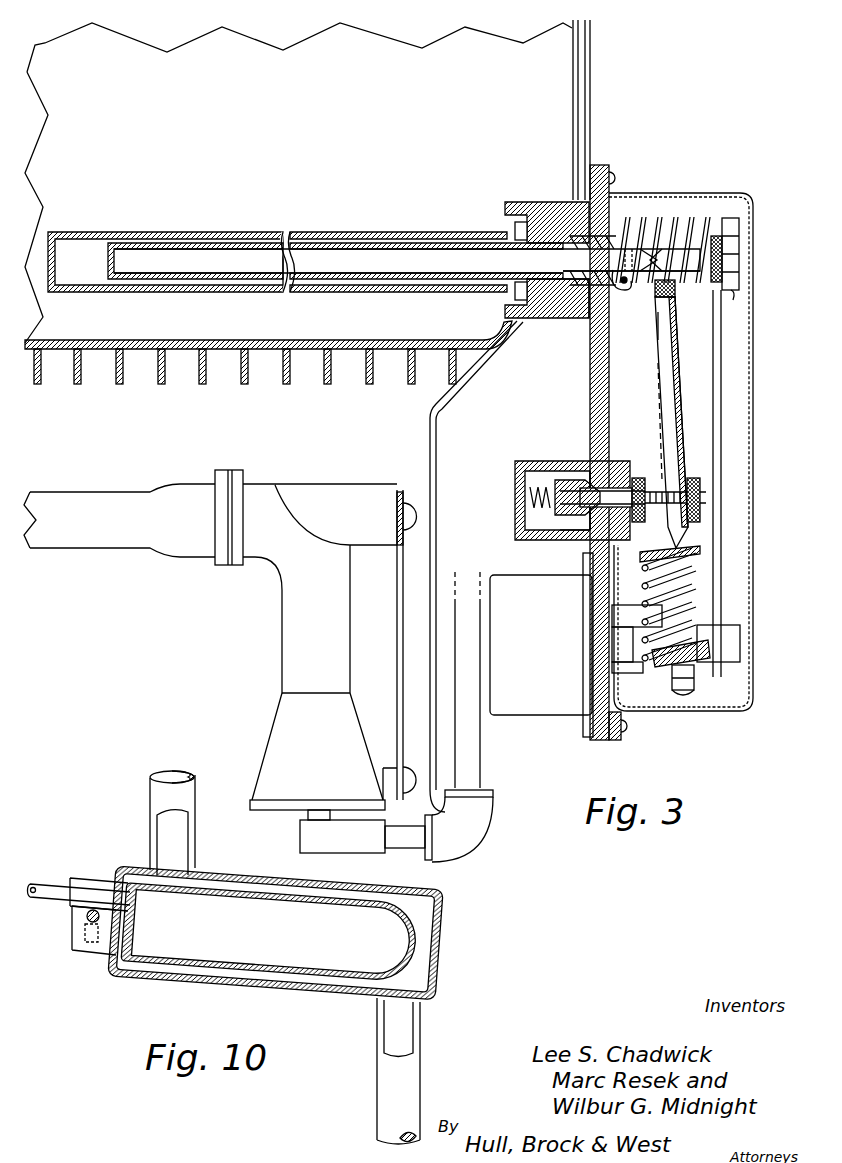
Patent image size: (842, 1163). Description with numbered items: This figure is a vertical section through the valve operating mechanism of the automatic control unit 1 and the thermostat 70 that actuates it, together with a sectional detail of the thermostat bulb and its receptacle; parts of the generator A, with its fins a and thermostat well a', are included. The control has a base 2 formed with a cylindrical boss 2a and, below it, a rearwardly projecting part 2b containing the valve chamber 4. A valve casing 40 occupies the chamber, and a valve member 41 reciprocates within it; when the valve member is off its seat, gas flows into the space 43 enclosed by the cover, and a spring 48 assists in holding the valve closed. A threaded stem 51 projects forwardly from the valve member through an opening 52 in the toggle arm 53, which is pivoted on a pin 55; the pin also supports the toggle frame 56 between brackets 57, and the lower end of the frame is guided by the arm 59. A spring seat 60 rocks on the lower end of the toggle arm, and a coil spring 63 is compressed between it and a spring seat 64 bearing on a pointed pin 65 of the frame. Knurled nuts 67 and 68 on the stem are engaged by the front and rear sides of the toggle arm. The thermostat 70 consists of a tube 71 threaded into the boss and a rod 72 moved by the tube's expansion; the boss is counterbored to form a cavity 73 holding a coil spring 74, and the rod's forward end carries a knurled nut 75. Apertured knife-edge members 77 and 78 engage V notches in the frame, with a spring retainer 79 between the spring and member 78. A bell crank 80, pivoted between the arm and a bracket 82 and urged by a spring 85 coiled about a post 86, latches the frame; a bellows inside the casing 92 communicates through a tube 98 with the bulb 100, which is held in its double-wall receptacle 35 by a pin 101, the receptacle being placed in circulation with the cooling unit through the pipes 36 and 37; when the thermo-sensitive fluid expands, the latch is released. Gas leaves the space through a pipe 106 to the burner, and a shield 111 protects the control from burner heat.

In FIG. 3, the automatic control unit 1 is at (112, 545).
In FIG. 3, the base 2 is at (605, 163).
In FIG. 3, the cylindrical boss 2a is at (545, 203).
In FIG. 3, the rearwardly projecting part 2b is at (562, 460).
In FIG. 3, the valve chamber 4 is at (530, 480).
In FIG. 10, the heater casing 35 is at (447, 958).
In FIG. 10, the inlet pipe 36 is at (151, 823).
In FIG. 10, the outlet pipe 37 is at (412, 1075).
In FIG. 3, the valve casing 40 is at (627, 460).
In FIG. 3, the valve member 41 is at (582, 535).
In FIG. 3, the space enclosed by cover 43 is at (753, 412).
In FIG. 3, the spring 48 is at (540, 512).
In FIG. 3, the threaded stem 51 is at (680, 482).
In FIG. 3, the opening 52 is at (658, 515).
In FIG. 3, the toggle arm 53 is at (667, 412).
In FIG. 3, the pin 55 is at (650, 333).
In FIG. 3, the toggle frame 56 is at (687, 378).
In FIG. 3, the brackets 57 is at (622, 325).
In FIG. 3, the arm 59 is at (612, 617).
In FIG. 3, the spring seat 60 is at (694, 554).
In FIG. 3, the coil spring 63 is at (697, 581).
In FIG. 3, the spring seat 64 is at (660, 667).
In FIG. 3, the pointed pin 65 is at (692, 672).
In FIG. 3, the knurled nut 67 is at (702, 490).
In FIG. 3, the knurled nut 68 is at (641, 476).
In FIG. 3, the thermostat 70 is at (392, 234).
In FIG. 3, the tube 71 is at (353, 292).
In FIG. 3, the rod 72 is at (225, 262).
In FIG. 3, the cavity 73 is at (572, 320).
In FIG. 3, the coil spring 74 is at (616, 284).
In FIG. 3, the knurled nut 75 is at (735, 285).
In FIG. 3, the apertured knife-edge bearing member 77 is at (730, 217).
In FIG. 3, the apertured knife-edge bearing member 78 is at (652, 226).
In FIG. 3, the spring retainer 79 is at (625, 214).
In FIG. 3, the bell crank 80 is at (740, 641).
In FIG. 3, the bracket 82 is at (612, 668).
In FIG. 3, the spring 85 is at (722, 438).
In FIG. 3, the post 86 is at (716, 233).
In FIG. 3, the cylindrical casing 92 is at (541, 645).
In FIG. 10, the tube 98 is at (50, 882).
In FIG. 10, the bulb 100 is at (172, 945).
In FIG. 10, the pin 101 is at (85, 916).
In FIG. 3, the pipe 106 is at (480, 750).
In FIG. 3, the shield 111 is at (593, 80).
In FIG. 3, the fins a is at (245, 384).
In FIG. 3, the thermostat well a' is at (168, 277).
In FIG. 3, the generator A is at (308, 350).